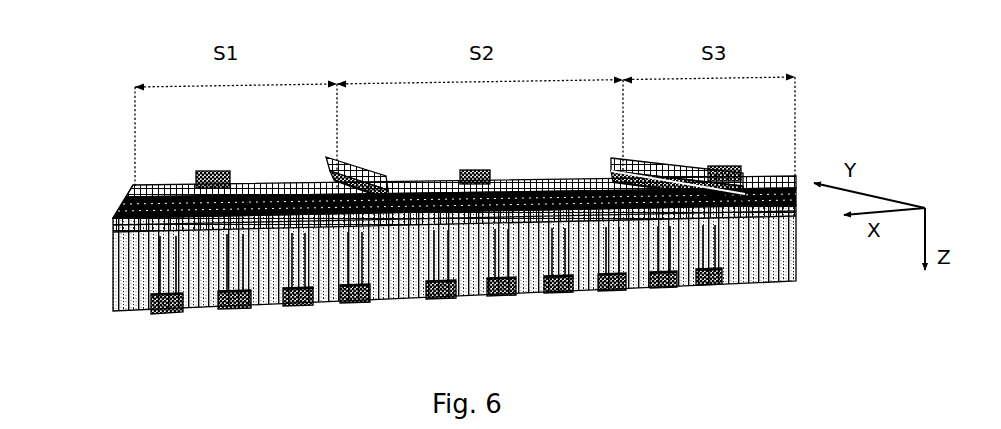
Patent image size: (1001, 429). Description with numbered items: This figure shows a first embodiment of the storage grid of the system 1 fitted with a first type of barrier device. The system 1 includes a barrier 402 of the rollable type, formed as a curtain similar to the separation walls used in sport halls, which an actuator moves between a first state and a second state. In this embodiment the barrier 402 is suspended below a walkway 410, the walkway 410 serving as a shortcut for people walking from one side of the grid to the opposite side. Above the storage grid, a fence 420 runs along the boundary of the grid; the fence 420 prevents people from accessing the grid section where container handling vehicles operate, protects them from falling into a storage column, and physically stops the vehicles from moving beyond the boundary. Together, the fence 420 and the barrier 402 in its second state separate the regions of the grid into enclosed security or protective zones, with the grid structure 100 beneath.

The system 1 is at (86, 127).
The battery module 100 is at (104, 246).
The barrier 402 is at (340, 212).
The walkway 410 is at (355, 147).
The fence 420 is at (524, 160).